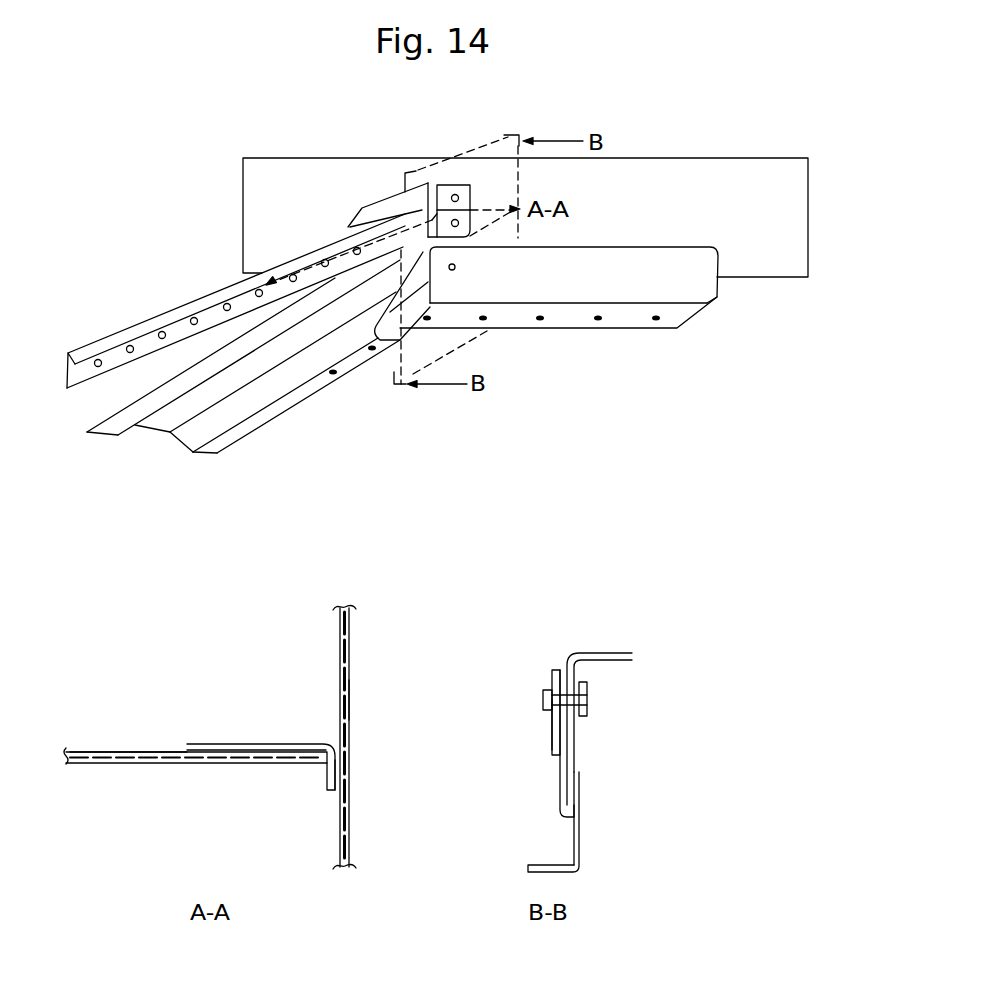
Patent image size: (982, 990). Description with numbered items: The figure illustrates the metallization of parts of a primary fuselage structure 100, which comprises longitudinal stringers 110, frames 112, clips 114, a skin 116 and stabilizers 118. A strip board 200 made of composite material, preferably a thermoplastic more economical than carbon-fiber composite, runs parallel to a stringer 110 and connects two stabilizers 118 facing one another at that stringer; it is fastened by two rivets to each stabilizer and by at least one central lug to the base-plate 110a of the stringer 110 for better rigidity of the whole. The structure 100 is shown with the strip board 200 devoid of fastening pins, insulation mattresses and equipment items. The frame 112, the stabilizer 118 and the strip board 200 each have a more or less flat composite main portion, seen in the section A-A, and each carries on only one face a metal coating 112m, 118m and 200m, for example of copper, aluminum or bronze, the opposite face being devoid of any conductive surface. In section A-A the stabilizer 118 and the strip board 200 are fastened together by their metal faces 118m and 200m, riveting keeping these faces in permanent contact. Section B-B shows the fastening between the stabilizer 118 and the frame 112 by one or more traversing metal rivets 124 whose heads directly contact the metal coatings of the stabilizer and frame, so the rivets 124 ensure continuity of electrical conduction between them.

The primary fuselage structure 100 is at (160, 190).
The longitudinal stringer 110 is at (127, 441).
The base-plate of stringer 110a is at (213, 453).
The frame 112 is at (258, 170).
The metal coating of frame 112m is at (361, 699).
The clip 114 is at (570, 290).
The skin 116 is at (464, 431).
The stabilizer 118 is at (377, 207).
The metal coating of stabilizer 118m is at (541, 742).
The traversing metal rivet 124 is at (587, 699).
The strip board 200 is at (113, 356).
The metal coating of strip board 200m is at (100, 741).